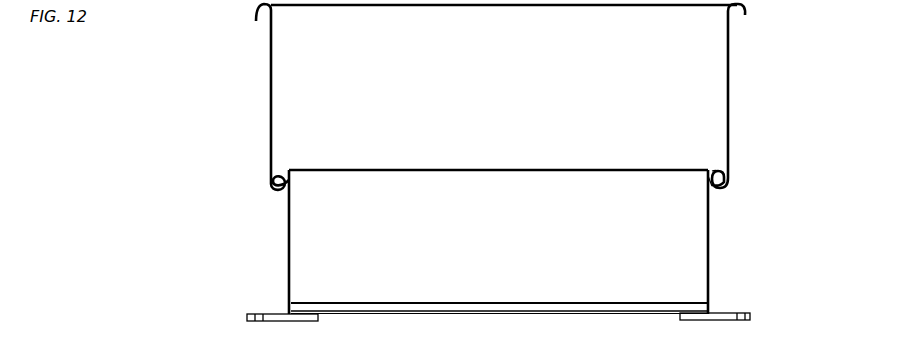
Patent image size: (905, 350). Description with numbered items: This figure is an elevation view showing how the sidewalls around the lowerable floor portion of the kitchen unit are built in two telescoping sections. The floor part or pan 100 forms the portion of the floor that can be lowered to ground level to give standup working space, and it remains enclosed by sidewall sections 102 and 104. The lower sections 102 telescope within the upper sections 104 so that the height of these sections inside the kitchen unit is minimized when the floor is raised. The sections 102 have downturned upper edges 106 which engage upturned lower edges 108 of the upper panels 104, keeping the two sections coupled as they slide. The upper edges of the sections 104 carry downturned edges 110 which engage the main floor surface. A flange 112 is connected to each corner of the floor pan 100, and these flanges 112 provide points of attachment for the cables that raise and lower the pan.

The floor part 100 is at (438, 302).
The lower sidewall section 102 is at (487, 234).
The upper sidewall section 104 is at (482, 94).
The downturned upper edge 106 is at (712, 186).
The upturned lower edge 108 is at (707, 178).
The downturned edge 110 is at (746, 14).
The flange 112 is at (263, 313).